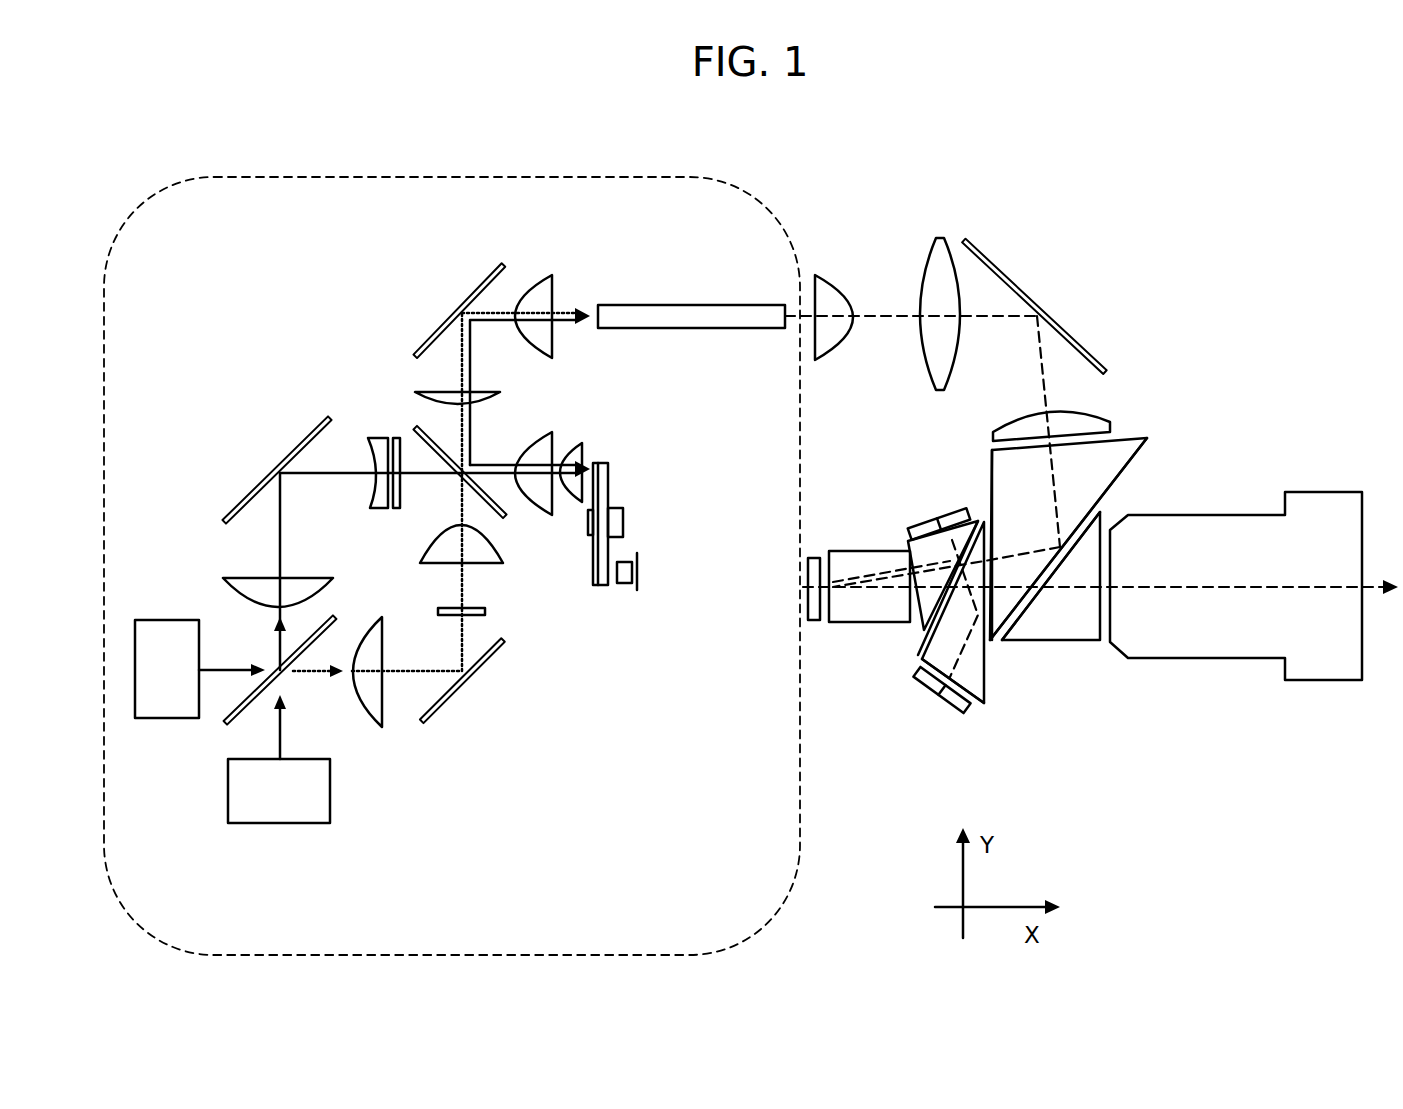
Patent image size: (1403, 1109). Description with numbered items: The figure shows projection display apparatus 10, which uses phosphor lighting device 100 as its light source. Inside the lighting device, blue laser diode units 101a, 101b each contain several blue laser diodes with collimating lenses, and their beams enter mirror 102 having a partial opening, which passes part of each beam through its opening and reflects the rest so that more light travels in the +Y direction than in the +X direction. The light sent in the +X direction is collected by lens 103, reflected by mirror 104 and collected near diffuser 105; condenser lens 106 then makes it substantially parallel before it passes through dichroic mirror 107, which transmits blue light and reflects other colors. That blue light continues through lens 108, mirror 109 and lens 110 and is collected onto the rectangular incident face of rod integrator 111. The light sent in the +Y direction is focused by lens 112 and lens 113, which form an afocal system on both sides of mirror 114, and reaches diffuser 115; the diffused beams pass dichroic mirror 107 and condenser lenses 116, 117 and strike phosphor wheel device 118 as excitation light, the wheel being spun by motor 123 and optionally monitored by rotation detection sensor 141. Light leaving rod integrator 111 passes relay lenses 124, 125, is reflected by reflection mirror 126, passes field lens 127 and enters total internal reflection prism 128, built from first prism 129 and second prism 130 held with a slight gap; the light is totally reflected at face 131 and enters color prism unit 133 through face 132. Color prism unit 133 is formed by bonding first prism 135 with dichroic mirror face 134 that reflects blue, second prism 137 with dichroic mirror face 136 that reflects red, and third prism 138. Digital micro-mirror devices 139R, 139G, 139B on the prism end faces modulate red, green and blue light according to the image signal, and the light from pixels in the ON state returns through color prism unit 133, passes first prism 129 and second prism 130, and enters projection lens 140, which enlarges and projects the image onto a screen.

The projection display apparatus 10 is at (1228, 184).
The phosphor lighting device 100 is at (705, 172).
The blue laser diode unit 101a is at (170, 632).
The blue laser diode unit 101b is at (280, 803).
The mirror having a partial opening 102 is at (225, 728).
The lens 103 is at (378, 718).
The mirror 104 is at (450, 697).
The diffuser 105 is at (420, 607).
The condenser lens 106 is at (478, 555).
The dichroic mirror 107 is at (507, 520).
The lens 108 is at (500, 395).
The mirror 109 is at (437, 327).
The lens 110 is at (547, 283).
The rod integrator 111 is at (650, 315).
The lens 112 is at (243, 570).
The lens 113 is at (372, 445).
The mirror 114 is at (285, 455).
The diffuser 115 is at (396, 440).
The condenser lens 116 is at (545, 445).
The condenser lens 117 is at (590, 460).
The phosphor wheel device 118 is at (604, 592).
The motor 123 is at (615, 525).
The relay lens 124 is at (828, 285).
The relay lens 125 is at (938, 285).
The reflection mirror 126 is at (1023, 287).
The field lens 127 is at (1100, 427).
The total internal reflection prism 128 is at (1079, 551).
The first prism 129 is at (1085, 487).
The second prism 130 is at (1082, 625).
The face 131 is at (1127, 465).
The face 132 is at (990, 460).
The color prism unit 133 is at (1000, 692).
The dichroic mirror face 134 is at (920, 655).
The first prism 135 is at (977, 687).
The dichroic mirror face 136 is at (894, 555).
The second prism 137 is at (920, 545).
The third prism 138 is at (828, 551).
The digital micro-mirror device 139G is at (808, 580).
The digital micro-mirror device 139R is at (940, 520).
The digital micro-mirror device 139B is at (948, 702).
The projection lens 140 is at (1217, 630).
The rotation detection sensor 141 is at (628, 588).